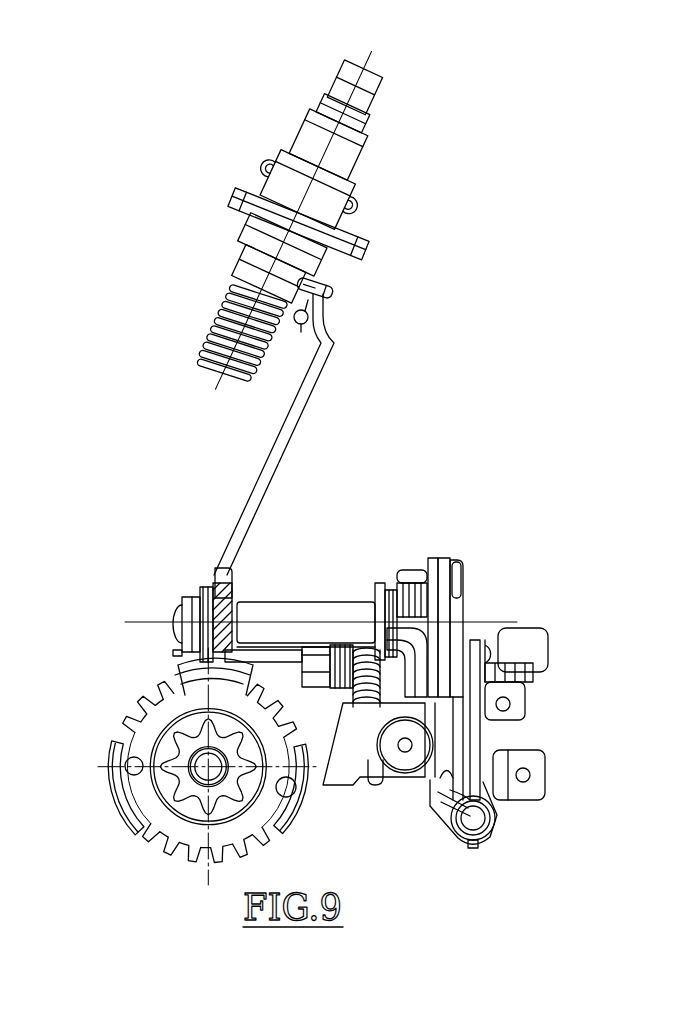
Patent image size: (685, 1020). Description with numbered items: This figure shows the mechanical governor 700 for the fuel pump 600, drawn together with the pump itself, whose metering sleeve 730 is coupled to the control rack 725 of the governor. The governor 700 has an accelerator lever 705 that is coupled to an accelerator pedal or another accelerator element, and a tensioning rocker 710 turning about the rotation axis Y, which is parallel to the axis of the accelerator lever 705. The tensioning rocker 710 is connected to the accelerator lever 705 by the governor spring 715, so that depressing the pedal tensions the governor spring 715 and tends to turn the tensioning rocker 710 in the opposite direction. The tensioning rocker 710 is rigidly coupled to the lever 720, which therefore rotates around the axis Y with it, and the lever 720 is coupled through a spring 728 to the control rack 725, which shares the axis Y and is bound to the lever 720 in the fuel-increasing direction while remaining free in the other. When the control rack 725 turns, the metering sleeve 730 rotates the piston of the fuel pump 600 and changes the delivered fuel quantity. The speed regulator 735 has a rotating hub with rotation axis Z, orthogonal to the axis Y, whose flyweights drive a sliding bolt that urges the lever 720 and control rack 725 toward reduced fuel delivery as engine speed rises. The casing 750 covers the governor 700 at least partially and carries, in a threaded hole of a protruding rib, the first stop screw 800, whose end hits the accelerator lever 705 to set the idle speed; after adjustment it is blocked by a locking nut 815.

The fuel pump 600 is at (255, 143).
The metering sleeve 730 is at (334, 290).
The control rack 725 is at (253, 490).
The spring 728 is at (204, 588).
The lever 720 is at (181, 598).
The governor 700 is at (379, 549).
The casing 750 is at (448, 577).
The governor spring 715 is at (352, 650).
The tensioning rocker 710 is at (524, 697).
The accelerator lever 705 is at (484, 730).
The locking nut 815 is at (460, 836).
The first stop screw 800 is at (482, 824).
The speed regulator 735 is at (100, 702).
The rotation axis Y is at (486, 618).
The rotation axis Z is at (178, 798).